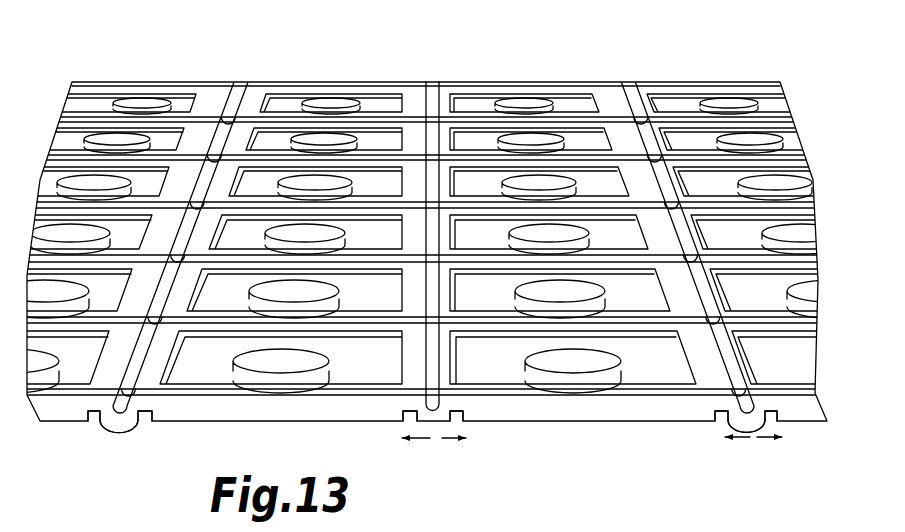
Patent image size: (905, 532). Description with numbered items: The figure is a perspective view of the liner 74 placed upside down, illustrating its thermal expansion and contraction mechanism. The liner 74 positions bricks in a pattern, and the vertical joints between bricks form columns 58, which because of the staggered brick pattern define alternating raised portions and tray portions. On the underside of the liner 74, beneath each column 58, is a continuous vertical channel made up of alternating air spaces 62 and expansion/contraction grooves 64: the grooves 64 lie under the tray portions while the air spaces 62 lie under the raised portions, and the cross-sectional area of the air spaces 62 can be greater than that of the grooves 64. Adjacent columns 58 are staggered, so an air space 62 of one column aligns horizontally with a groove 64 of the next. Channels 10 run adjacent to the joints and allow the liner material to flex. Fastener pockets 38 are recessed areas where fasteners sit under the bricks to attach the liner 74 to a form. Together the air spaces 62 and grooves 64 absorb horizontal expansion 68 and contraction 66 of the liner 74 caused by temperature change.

The channel 10 is at (95, 418).
The fastener pocket 38 is at (600, 370).
The vertical column 58 is at (120, 432).
The air space 62 is at (425, 145).
The expansion/contraction groove 64 is at (215, 220).
The contraction 66 is at (447, 440).
The expansion 68 is at (780, 443).
The liner 74 is at (424, 70).